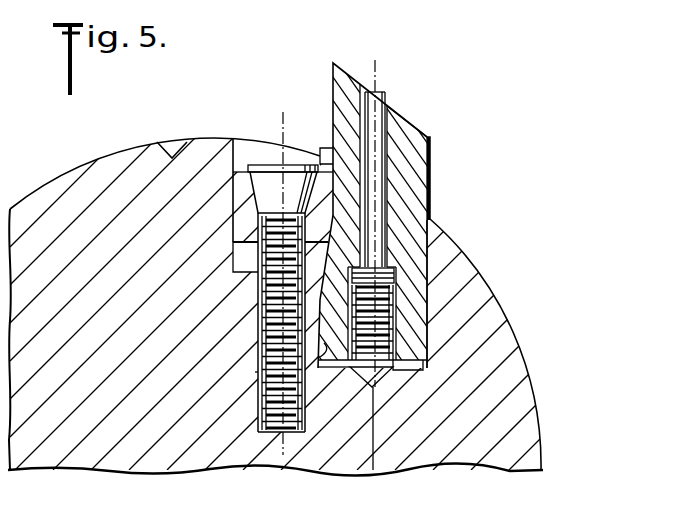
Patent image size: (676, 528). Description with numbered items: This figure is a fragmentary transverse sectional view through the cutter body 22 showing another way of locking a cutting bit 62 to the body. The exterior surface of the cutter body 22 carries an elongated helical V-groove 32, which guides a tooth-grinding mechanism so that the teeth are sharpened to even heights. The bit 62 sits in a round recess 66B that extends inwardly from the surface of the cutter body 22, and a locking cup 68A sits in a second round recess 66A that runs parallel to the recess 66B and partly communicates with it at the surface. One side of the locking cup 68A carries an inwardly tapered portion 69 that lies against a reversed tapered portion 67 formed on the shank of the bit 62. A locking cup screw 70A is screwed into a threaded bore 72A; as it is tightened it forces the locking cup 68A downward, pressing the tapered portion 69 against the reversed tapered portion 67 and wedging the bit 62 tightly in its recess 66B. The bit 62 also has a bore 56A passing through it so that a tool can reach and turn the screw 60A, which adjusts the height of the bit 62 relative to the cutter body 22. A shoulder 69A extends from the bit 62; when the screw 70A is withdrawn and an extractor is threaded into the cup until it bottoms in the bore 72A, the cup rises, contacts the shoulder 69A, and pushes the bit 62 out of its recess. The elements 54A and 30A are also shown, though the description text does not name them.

The cutter body 22 is at (522, 399).
The helical V-groove 32 is at (172, 141).
The locking cup 68A is at (237, 182).
The shoulder 69A is at (330, 142).
The inwardly tapered portion 69 is at (313, 186).
The locking cup screw 70A is at (273, 299).
The reversed tapered portion 67 is at (260, 268).
The threaded bore 72A is at (258, 387).
The round recess 66A is at (237, 248).
The round recess 66B is at (420, 234).
The cutting bit 62 is at (417, 122).
The wall 54A is at (430, 157).
The bore 56A is at (383, 124).
The screw 60A is at (395, 308).
The bottom plate 30A is at (414, 372).